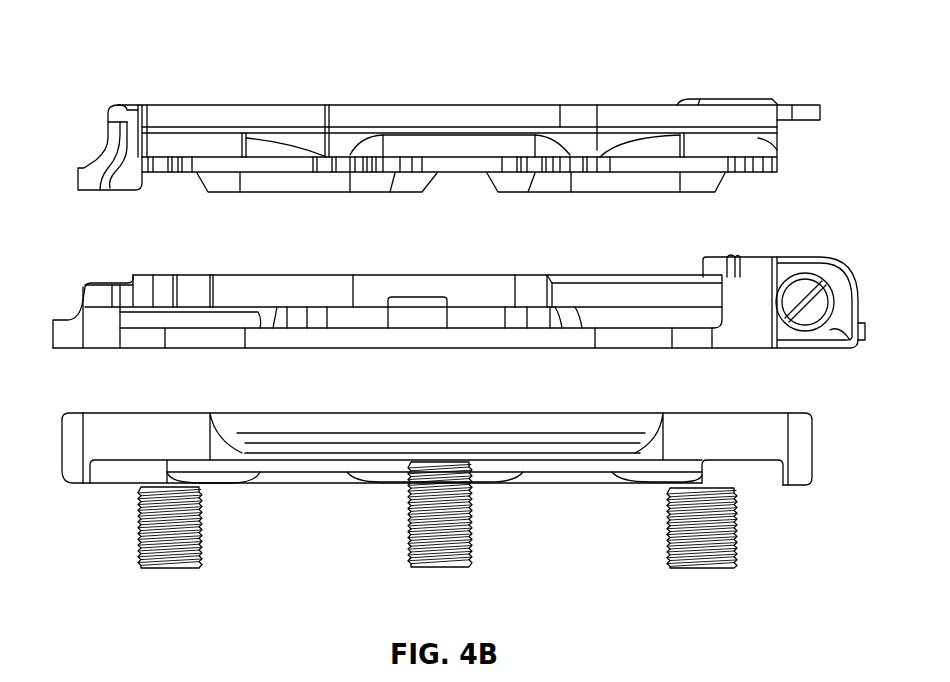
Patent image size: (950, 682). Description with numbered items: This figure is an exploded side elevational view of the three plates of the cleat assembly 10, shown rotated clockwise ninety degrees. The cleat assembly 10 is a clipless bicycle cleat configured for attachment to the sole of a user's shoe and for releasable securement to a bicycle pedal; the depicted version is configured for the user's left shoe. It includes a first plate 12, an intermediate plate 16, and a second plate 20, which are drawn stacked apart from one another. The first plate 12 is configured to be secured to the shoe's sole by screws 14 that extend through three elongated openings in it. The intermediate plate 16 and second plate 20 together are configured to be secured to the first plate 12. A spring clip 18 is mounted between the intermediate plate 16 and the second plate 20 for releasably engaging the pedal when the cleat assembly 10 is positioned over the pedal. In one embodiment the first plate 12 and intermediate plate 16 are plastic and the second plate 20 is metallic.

The cleat assembly 10 is at (95, 48).
The first plate 12 is at (805, 445).
The screws 14 is at (137, 542).
The intermediate plate 16 is at (838, 285).
The spring clip 18 is at (187, 275).
The second plate 20 is at (768, 139).